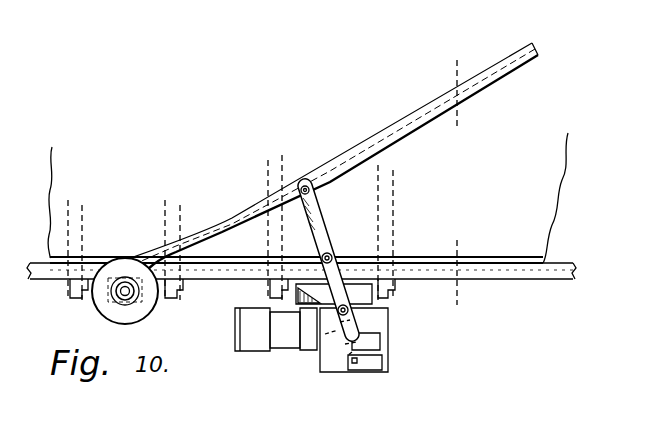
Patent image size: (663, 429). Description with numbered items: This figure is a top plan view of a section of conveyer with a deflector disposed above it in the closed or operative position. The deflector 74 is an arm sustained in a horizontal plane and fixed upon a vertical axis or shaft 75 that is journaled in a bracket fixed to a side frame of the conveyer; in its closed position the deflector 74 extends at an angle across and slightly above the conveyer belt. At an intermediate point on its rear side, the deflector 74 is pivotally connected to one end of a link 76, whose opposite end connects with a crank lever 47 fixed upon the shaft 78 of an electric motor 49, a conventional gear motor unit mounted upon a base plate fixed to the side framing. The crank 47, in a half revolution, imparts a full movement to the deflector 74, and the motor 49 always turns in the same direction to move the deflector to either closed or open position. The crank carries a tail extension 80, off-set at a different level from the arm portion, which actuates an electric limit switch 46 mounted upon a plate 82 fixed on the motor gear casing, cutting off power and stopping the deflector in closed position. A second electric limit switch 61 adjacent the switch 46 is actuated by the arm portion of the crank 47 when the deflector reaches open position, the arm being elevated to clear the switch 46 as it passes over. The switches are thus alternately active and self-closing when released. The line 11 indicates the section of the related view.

The platform / reference line 11 is at (508, 296).
The deflector 74 is at (332, 152).
The vertical axis or shaft 75 is at (125, 290).
The link 76 is at (318, 225).
The crank lever 47 is at (333, 256).
The shaft of electric motor 78 is at (383, 300).
The electric limit switch 46 is at (383, 347).
The electric motor 49 is at (292, 339).
The tail extension 80 is at (343, 342).
The plate 82 is at (338, 369).
The second electric limit switch 61 is at (367, 399).